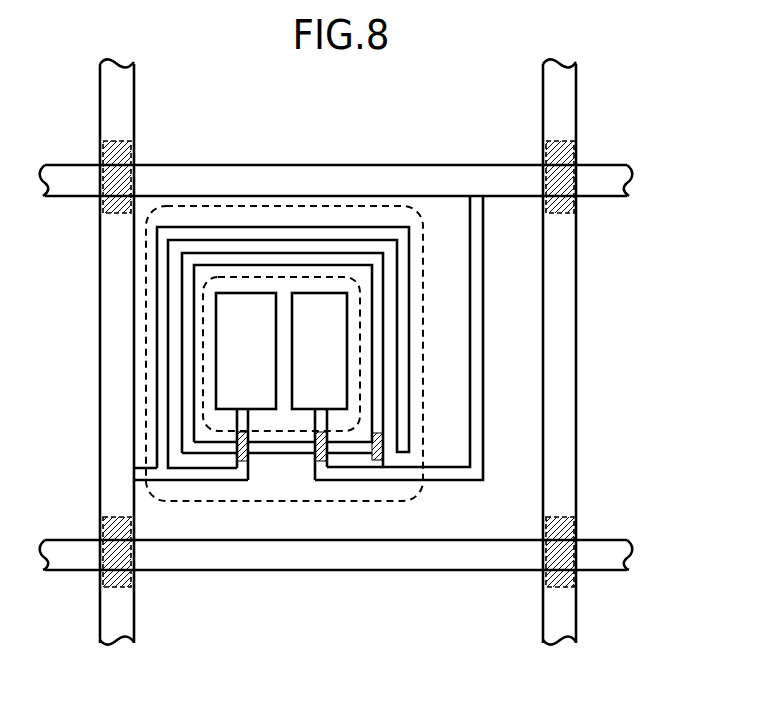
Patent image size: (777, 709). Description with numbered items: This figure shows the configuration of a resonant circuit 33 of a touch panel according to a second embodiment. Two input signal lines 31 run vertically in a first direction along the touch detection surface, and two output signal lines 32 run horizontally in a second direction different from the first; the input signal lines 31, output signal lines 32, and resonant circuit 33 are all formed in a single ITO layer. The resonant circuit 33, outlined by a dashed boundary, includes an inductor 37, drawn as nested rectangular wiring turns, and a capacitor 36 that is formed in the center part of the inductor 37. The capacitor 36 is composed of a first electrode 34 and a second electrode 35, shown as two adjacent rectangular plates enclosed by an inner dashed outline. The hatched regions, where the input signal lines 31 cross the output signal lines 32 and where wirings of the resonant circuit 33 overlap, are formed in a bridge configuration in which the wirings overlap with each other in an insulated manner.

The input signal line 31 is at (134, 93).
The output signal line 32 is at (75, 165).
The resonant circuit 33 is at (420, 482).
The first electrode 34 is at (321, 293).
The second electrode 35 is at (248, 293).
The capacitor 36 is at (361, 312).
The inductor 37 is at (410, 412).